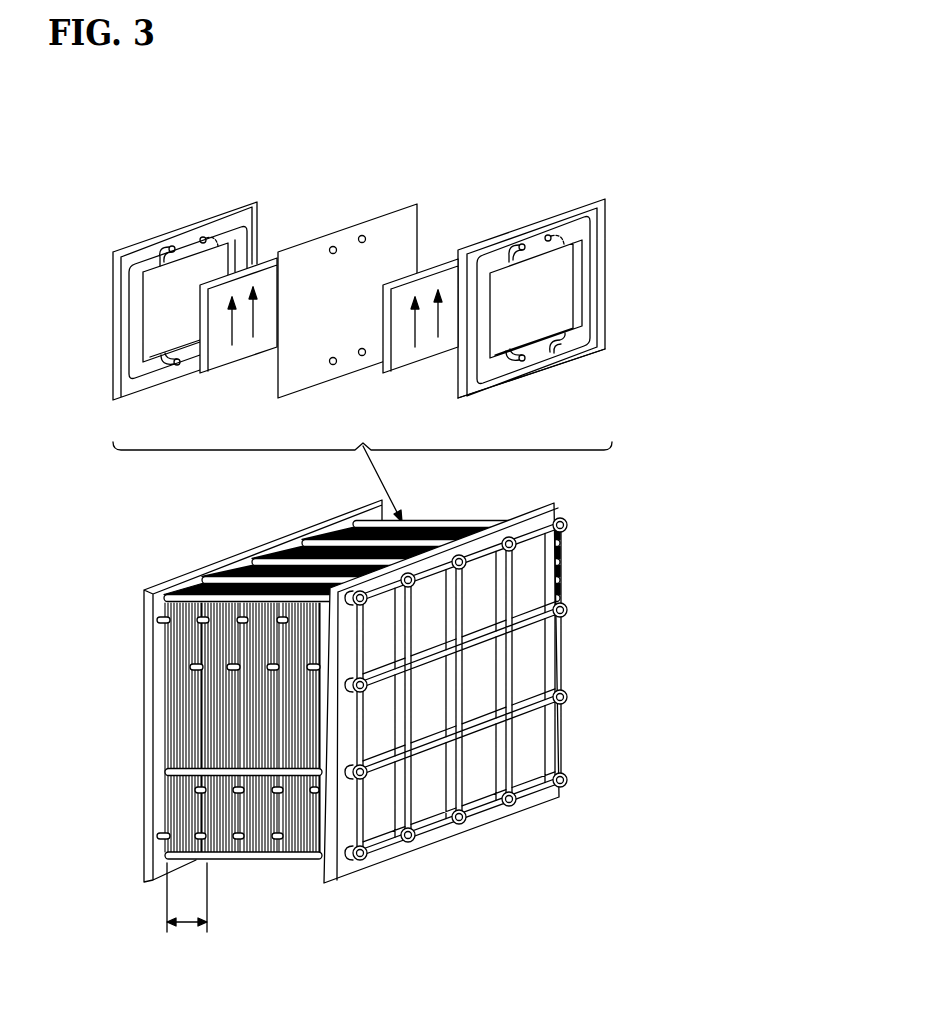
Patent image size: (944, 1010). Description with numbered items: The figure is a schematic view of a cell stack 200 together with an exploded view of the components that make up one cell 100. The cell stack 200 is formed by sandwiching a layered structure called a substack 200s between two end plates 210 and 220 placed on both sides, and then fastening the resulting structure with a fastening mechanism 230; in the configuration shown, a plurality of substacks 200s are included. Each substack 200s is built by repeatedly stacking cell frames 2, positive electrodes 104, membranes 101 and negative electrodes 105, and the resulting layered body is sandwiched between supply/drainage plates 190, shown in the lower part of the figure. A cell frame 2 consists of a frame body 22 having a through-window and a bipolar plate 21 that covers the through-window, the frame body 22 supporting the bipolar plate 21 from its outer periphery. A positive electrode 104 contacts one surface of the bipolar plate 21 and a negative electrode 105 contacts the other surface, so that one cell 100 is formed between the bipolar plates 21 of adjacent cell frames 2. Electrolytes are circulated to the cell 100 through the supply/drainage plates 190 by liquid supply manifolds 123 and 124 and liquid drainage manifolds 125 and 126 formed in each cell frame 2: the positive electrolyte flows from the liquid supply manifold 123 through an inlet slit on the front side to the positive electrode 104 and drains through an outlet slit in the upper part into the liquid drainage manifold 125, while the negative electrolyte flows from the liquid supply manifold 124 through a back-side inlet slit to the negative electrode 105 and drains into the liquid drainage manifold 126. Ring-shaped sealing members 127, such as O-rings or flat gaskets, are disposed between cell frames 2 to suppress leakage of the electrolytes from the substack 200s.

The cell 100 is at (318, 140).
The membrane 101 is at (373, 219).
The positive electrode 104 is at (256, 354).
The negative electrode 105 is at (408, 362).
The cell frame 2 is at (48, 332).
The bipolar plate 21 is at (160, 322).
The frame body 22 is at (118, 312).
The liquid supply manifold 123 is at (585, 362).
The liquid supply manifold 124 is at (176, 366).
The liquid drainage manifold 125 is at (170, 247).
The liquid drainage manifold 126 is at (203, 237).
The ring-shaped sealing member 127 is at (252, 228).
The supply/drainage plate 190 is at (168, 818).
The cell stack 200 is at (576, 661).
The substack 200s is at (188, 916).
The end plate 210 is at (490, 748).
The end plate 220 is at (146, 606).
The fastening mechanism 230 is at (265, 561).